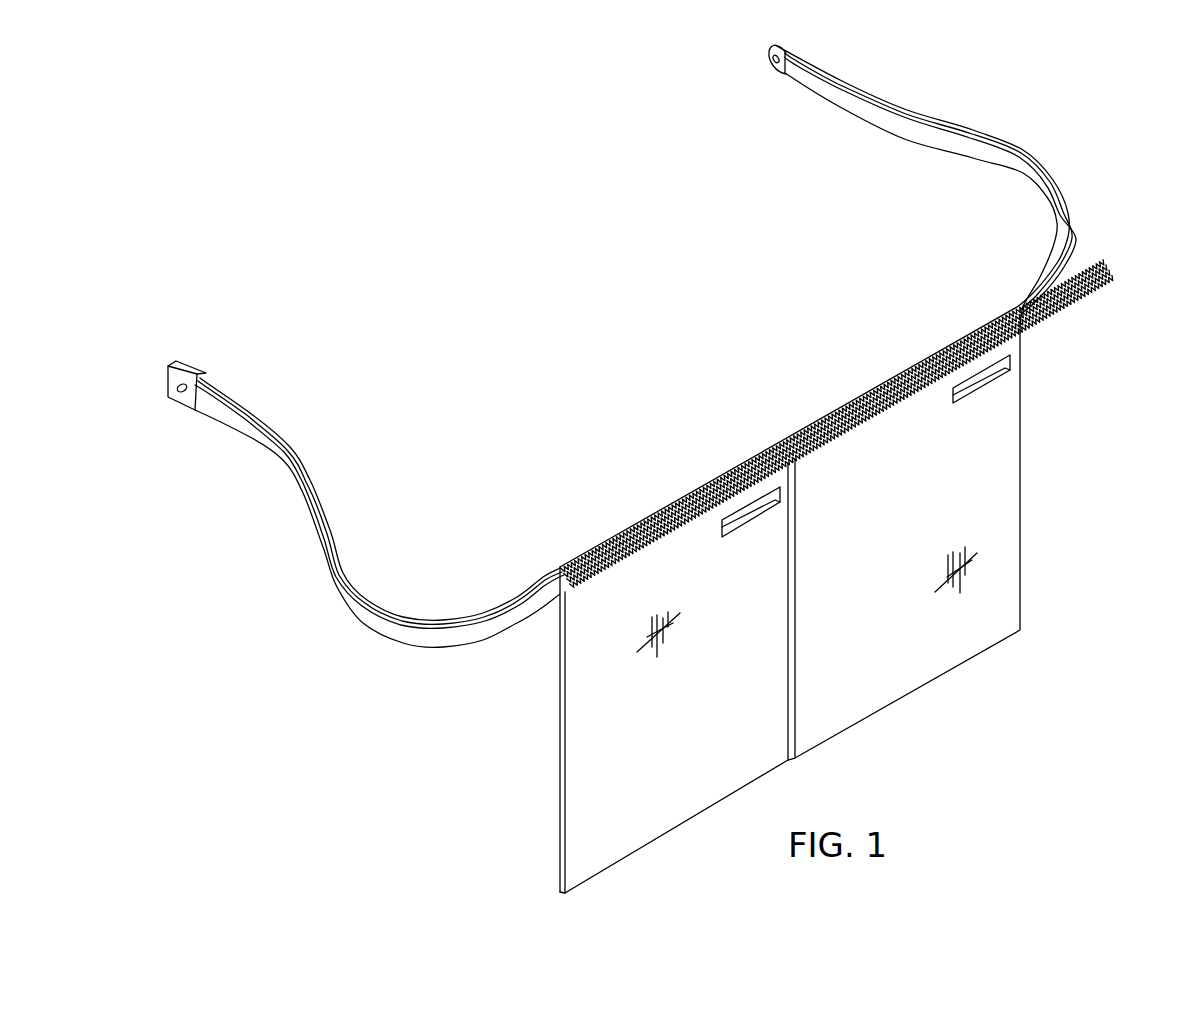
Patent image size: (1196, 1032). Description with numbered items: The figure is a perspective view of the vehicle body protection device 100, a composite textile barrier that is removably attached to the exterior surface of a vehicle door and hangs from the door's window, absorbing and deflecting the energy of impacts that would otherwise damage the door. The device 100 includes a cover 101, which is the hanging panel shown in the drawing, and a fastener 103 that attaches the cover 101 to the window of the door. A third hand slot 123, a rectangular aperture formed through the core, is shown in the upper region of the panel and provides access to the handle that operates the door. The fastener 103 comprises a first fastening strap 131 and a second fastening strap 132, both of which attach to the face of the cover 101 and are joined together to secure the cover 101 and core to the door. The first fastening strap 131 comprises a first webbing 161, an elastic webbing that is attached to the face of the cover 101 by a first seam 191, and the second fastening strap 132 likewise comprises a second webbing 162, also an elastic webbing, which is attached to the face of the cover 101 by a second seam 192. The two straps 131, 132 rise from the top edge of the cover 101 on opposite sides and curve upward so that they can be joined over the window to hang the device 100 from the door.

The vehicle body protection device 100 is at (535, 176).
The cover 101 is at (788, 575).
The fastener 103 is at (379, 525).
The third hand slot 123 is at (753, 510).
The first fastening strap 131 is at (177, 357).
The second fastening strap 132 is at (773, 73).
The first webbing 161 is at (418, 632).
The second webbing 162 is at (1065, 267).
The first seam 191 is at (628, 556).
The second seam 192 is at (893, 403).